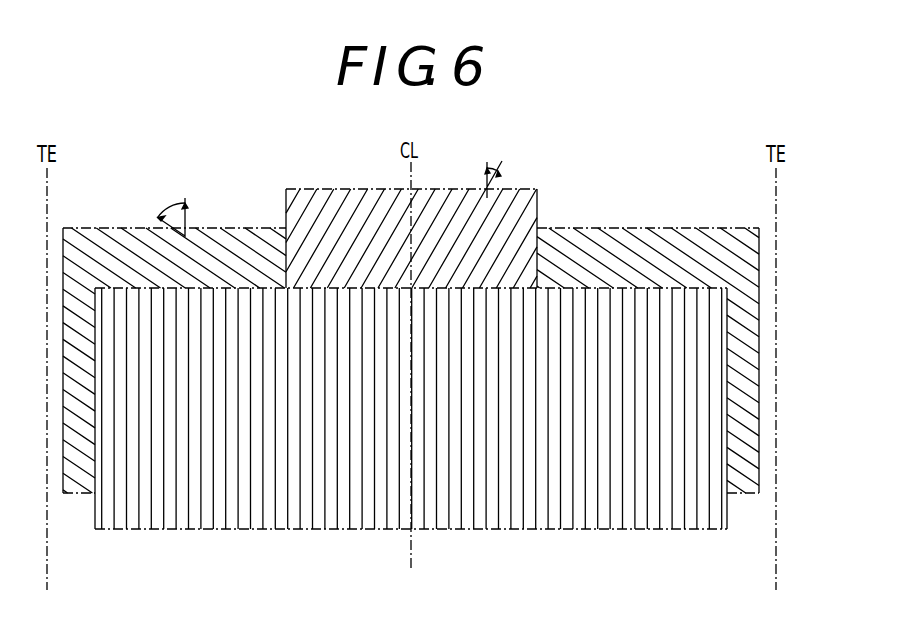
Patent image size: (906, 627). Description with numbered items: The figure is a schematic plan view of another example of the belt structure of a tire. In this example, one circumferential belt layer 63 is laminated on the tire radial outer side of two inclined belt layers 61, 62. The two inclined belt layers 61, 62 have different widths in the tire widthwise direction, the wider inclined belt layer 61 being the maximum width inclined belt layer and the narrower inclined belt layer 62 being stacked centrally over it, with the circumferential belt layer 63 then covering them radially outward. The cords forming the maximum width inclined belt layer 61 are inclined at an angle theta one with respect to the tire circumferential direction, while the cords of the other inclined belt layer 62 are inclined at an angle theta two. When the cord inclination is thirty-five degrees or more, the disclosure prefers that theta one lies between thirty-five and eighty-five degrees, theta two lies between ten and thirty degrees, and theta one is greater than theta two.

The inclined belt layer 61 is at (263, 236).
The inclined belt layer 62 is at (539, 200).
The circumferential belt layer 63 is at (617, 513).